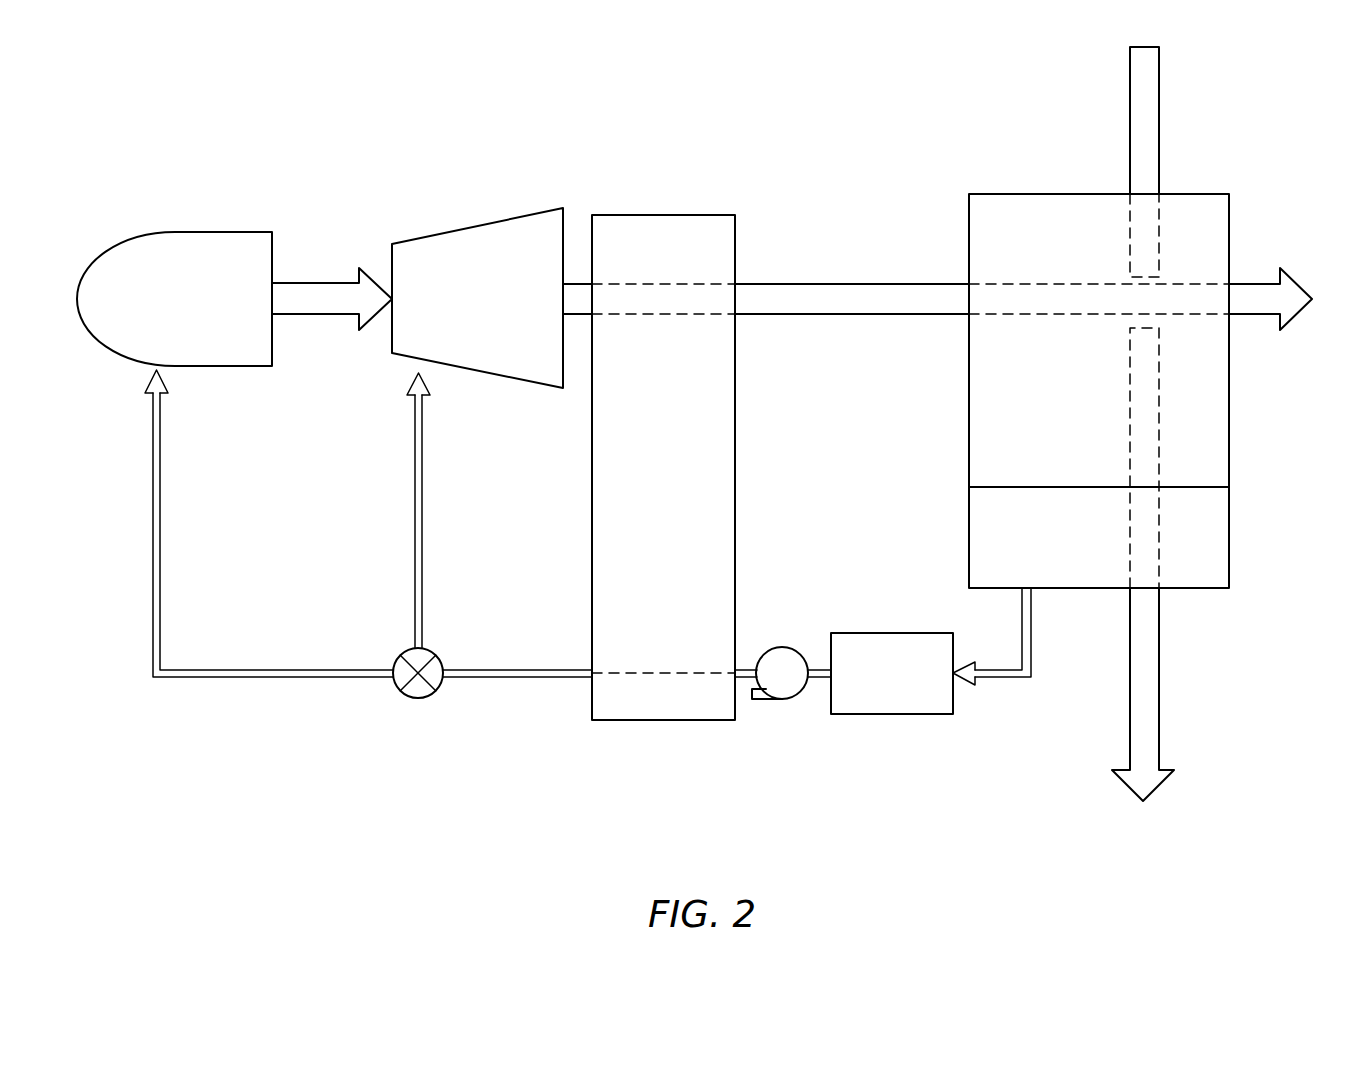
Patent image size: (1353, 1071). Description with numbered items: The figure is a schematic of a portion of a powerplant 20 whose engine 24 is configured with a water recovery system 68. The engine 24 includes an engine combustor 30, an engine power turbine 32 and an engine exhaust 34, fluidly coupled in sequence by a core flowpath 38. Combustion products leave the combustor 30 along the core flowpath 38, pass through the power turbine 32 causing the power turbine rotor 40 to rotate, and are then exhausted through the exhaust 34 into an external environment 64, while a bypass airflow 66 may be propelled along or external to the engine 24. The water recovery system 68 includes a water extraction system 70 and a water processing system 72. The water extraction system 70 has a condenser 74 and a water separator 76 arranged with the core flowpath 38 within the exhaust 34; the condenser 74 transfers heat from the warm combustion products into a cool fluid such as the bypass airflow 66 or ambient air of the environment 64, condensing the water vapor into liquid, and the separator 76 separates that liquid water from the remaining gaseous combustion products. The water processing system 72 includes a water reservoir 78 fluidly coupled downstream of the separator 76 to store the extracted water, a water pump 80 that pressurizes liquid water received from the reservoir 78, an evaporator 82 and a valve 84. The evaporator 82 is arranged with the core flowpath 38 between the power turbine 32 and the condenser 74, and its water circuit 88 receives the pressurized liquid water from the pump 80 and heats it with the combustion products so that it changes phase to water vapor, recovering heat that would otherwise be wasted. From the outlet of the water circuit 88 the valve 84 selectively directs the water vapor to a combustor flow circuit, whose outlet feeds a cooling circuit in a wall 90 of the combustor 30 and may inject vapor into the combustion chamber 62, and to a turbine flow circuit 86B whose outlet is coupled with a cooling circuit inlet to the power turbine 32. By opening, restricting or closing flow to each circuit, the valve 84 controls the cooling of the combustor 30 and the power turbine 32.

The powerplant 20 is at (138, 113).
The engine 24 is at (354, 165).
The engine combustor 30 is at (202, 218).
The combustion chamber 62 is at (172, 310).
The combustor wall 90 is at (224, 368).
The engine power turbine 32 is at (512, 200).
The power turbine rotor 40 is at (437, 233).
The engine exhaust 34 is at (944, 132).
The core flowpath 38 is at (798, 282).
The water processing system evaporator 82 is at (735, 523).
The water circuit of the evaporator 88 is at (627, 675).
The water extraction system 70 is at (1258, 479).
The water extraction system condenser 74 is at (1230, 388).
The water extraction system water separator 76 is at (1222, 530).
The bypass airflow 66 is at (1160, 82).
The external environment 64 is at (1290, 208).
The water recovery system 68 is at (908, 782).
The water processing system water reservoir 78 is at (892, 632).
The water processing system 72 is at (768, 763).
The water processing system water pump 80 is at (782, 646).
The water processing system valve 84 is at (130, 655).
The turbine water flow circuit 86B is at (400, 535).